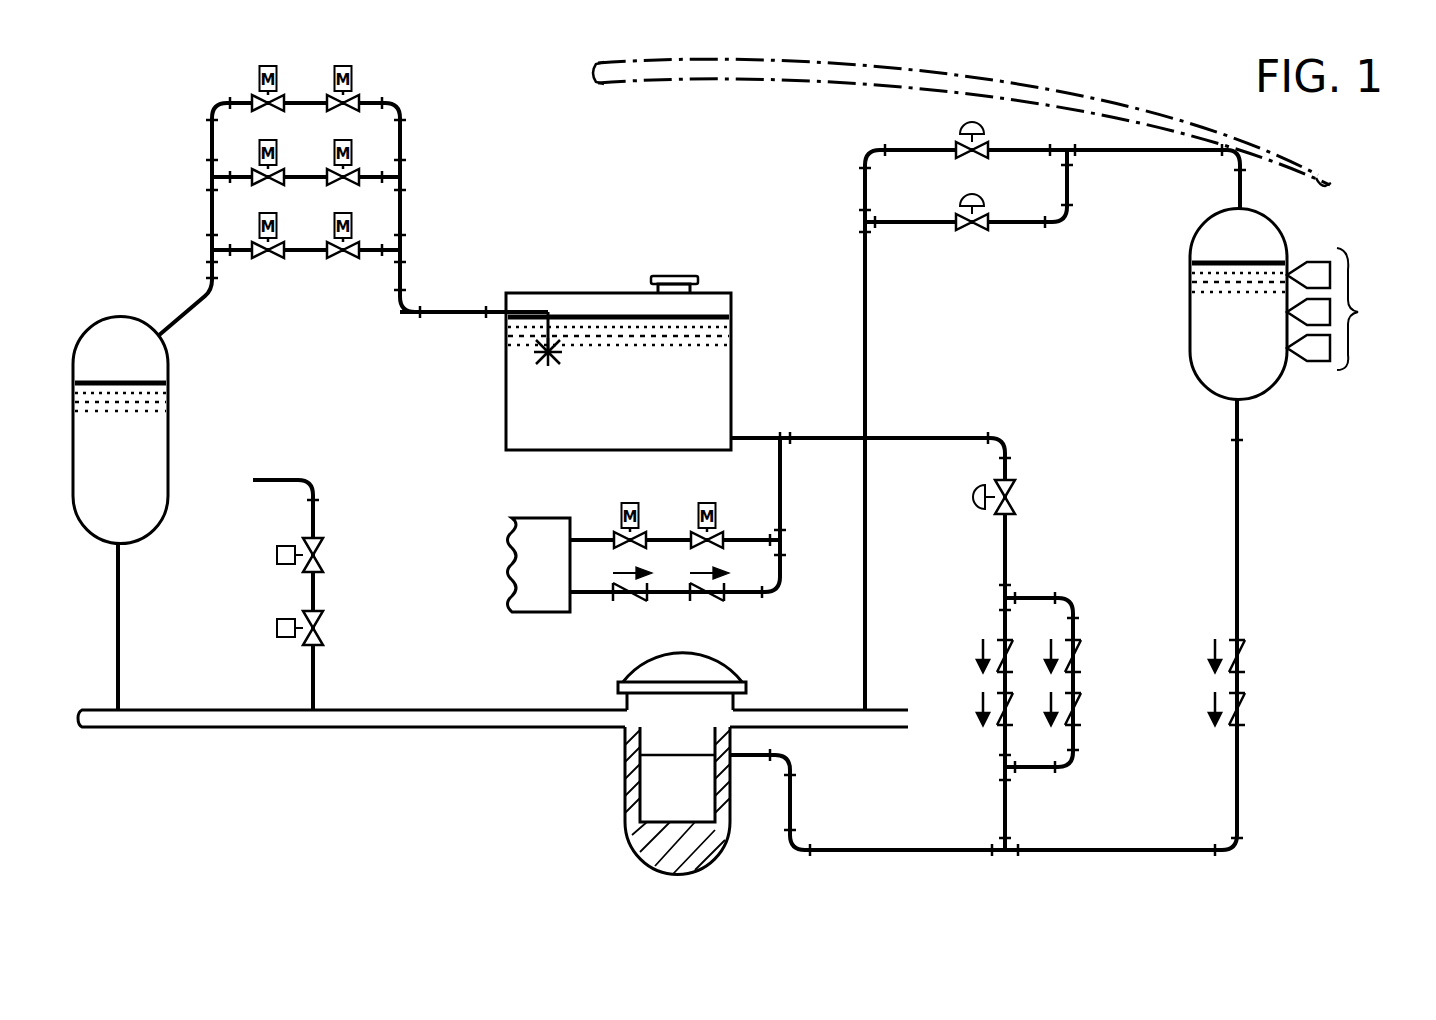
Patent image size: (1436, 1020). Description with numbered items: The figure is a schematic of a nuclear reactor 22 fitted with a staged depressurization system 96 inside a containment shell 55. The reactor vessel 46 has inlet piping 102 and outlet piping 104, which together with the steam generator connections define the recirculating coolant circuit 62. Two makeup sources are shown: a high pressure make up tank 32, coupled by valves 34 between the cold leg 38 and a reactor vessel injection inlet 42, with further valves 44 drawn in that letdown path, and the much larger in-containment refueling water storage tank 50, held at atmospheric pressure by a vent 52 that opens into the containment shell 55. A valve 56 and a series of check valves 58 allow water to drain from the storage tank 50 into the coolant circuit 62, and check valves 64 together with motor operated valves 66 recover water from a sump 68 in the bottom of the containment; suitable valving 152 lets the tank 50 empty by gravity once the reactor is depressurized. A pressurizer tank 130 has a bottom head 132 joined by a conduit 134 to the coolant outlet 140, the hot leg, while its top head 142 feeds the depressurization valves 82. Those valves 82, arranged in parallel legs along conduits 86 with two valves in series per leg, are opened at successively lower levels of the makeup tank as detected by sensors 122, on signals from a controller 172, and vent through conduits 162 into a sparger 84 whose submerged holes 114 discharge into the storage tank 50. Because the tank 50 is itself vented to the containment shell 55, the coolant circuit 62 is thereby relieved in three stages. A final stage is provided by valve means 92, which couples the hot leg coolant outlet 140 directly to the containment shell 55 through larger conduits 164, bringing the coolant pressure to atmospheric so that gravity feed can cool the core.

The nuclear reactor 22 is at (535, 786).
The high pressure make up tank 32 is at (1208, 310).
The valves 34 is at (960, 160).
The cold leg 38 is at (823, 712).
The reactor vessel injection inlet 42 is at (735, 758).
The letdown orifices 44 is at (1245, 665).
The reactor vessel 46 is at (627, 800).
The in-containment refueling water storage tank 50 is at (732, 393).
The vent 52 is at (688, 280).
The containment shell 55 is at (722, 72).
The valve 56 is at (1012, 488).
The check valves 58 is at (1012, 702).
The coolant circuit 62 is at (276, 742).
The check valves and/or motor operated valves 64 is at (640, 600).
The motor operated valves 66 is at (652, 532).
The sump 68 is at (530, 612).
The depressurization valves 82 is at (392, 238).
The sparger 84 is at (550, 378).
The conduits 86 is at (210, 112).
The valve means 92 is at (333, 545).
The depressurization system 96 is at (213, 742).
The inlet piping 102 is at (735, 712).
The outlet piping 104 is at (575, 708).
The holes 114 is at (558, 352).
The sensors 122 is at (1305, 365).
The pressurizer tank 130 is at (172, 428).
The bottom head 132 is at (122, 548).
The conduit 134 is at (120, 663).
The coolant outlet 140 is at (125, 730).
The top head 142 is at (128, 317).
The valving 152 is at (675, 492).
The conduits 162 is at (313, 180).
The conduits 164 is at (283, 480).
The controller 172 is at (1386, 309).